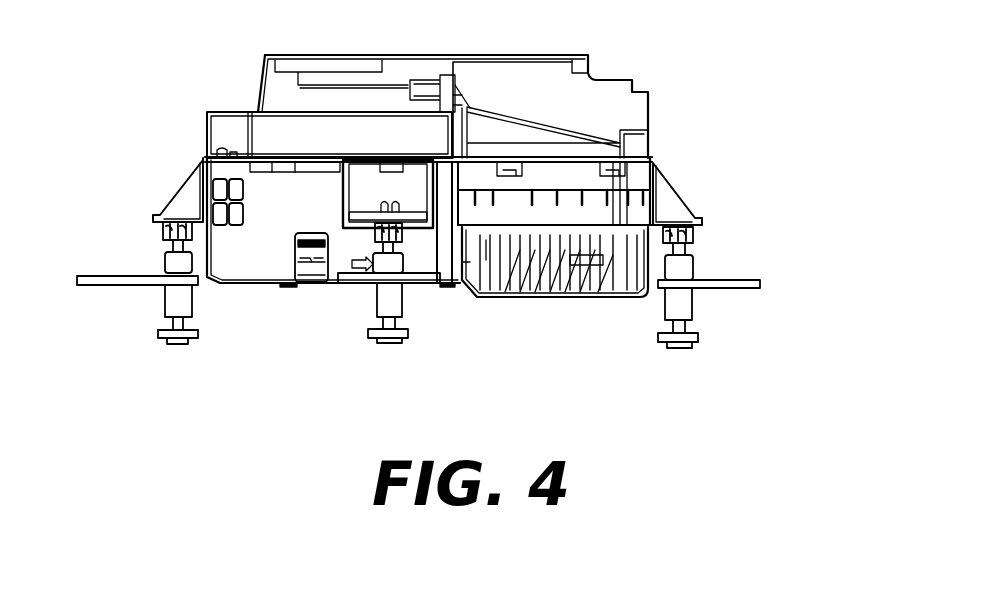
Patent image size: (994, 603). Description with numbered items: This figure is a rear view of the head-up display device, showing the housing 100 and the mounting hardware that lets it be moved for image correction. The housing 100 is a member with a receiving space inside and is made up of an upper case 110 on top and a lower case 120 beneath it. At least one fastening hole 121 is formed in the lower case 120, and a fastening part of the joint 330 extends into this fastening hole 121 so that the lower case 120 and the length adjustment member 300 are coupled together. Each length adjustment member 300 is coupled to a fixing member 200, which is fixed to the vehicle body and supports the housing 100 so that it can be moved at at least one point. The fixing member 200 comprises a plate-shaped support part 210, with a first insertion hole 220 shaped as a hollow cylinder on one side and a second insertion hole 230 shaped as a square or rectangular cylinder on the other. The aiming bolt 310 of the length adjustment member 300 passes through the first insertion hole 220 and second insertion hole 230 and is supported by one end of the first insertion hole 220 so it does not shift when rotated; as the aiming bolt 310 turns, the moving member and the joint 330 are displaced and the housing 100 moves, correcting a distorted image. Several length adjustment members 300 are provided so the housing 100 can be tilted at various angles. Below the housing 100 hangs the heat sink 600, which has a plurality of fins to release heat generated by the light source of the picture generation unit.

The housing 100 is at (735, 92).
The upper case 110 is at (643, 117).
The lower case 120 is at (643, 168).
The fastening hole 121 is at (185, 195).
The fixing member 200 is at (88, 273).
The support part 210 is at (760, 285).
The first insertion hole 220 is at (692, 312).
The second insertion hole 230 is at (692, 270).
The length adjustment member 300 is at (205, 337).
The aiming bolt 310 is at (658, 337).
The joint 330 is at (702, 223).
The heat sink 600 is at (502, 295).